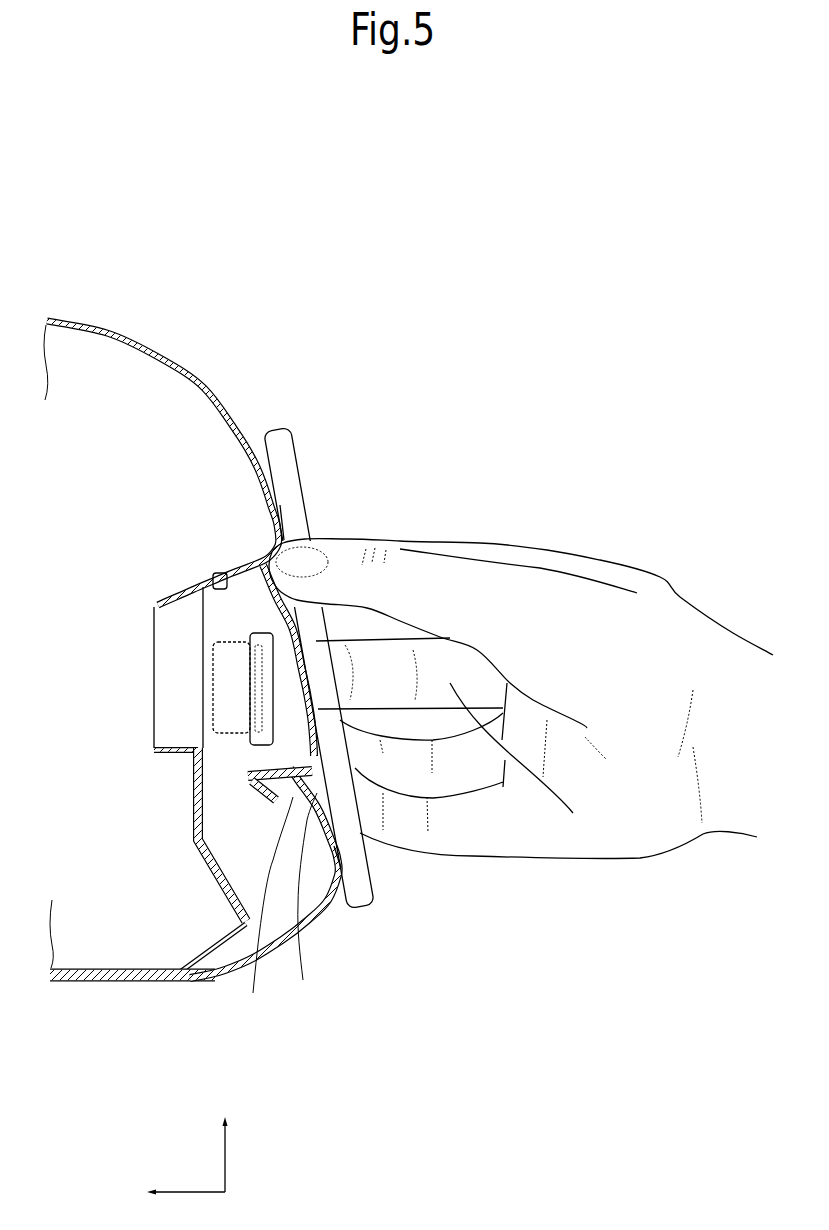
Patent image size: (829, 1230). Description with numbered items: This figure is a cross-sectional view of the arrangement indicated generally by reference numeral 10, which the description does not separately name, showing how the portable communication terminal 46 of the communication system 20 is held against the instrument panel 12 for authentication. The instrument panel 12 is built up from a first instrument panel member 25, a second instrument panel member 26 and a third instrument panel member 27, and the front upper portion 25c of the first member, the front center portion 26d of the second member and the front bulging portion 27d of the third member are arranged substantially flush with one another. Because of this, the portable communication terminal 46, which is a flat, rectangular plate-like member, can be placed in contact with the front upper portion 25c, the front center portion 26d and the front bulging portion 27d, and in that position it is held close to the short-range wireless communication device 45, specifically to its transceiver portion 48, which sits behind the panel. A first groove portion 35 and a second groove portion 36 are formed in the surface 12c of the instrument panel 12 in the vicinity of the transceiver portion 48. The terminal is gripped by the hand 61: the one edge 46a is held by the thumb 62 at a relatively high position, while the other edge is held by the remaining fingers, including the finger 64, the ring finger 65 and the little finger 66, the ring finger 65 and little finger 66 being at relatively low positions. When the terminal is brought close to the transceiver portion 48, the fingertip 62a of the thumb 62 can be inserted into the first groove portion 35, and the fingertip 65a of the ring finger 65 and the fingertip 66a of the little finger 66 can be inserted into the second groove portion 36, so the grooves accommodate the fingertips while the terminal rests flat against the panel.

The vehicle interior structure 10 is at (234, 209).
The instrument panel 12 is at (205, 326).
The first instrument panel member 25 is at (221, 387).
The surface of the instrument panel 12c is at (230, 423).
The front upper portion 25c is at (283, 515).
The portable communication terminal 46 is at (308, 435).
The one edge 46a is at (283, 485).
The communication system 20 is at (212, 605).
The fingertip of the thumb 62a is at (222, 577).
The short-range wireless communication device 45 is at (202, 663).
The transceiver portion 48 is at (255, 684).
The thumb 62 is at (398, 567).
The third instrument panel member 27 is at (327, 932).
The front bulging portion 27d is at (348, 861).
The fingertip of the ring finger 65a is at (303, 751).
The second groove portion 36 is at (266, 912).
The fingertip of the little finger 66a is at (308, 901).
The hand 61 is at (680, 607).
The second instrument panel member 26 is at (311, 626).
The front center portion 26d is at (445, 640).
The first groove portion 35 is at (280, 577).
The little finger 66 is at (467, 843).
The ring finger 65 is at (467, 777).
The finger 64 is at (573, 813).